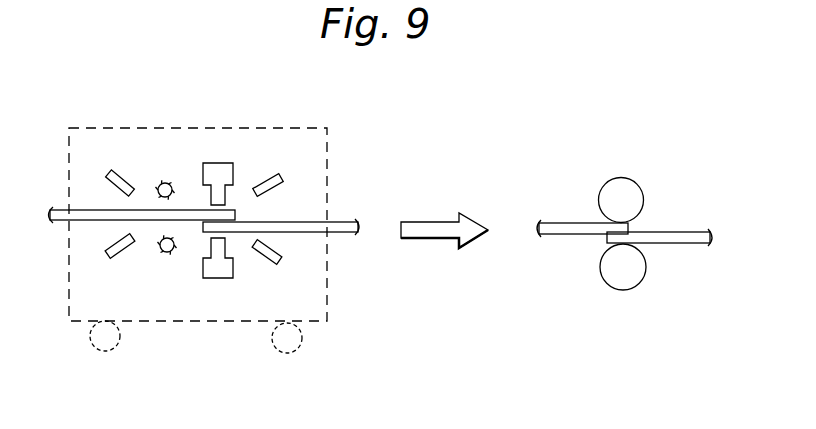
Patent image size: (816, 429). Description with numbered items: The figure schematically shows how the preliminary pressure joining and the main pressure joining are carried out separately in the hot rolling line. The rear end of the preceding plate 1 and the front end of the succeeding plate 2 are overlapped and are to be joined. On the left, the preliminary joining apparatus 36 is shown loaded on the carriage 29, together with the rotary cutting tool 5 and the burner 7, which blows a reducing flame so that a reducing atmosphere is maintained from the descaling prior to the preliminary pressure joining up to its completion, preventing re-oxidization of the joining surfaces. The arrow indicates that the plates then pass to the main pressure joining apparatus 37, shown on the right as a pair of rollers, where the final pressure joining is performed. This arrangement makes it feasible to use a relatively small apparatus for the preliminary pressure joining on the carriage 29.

The preceding plate 1 is at (318, 228).
The succeeding plate 2 is at (83, 219).
The rotary cutting tool 5 is at (161, 254).
The burner 7 is at (128, 176).
The carriage 29 is at (298, 288).
The preliminary joining apparatus 36 is at (223, 163).
The main pressure joining apparatus 37 is at (630, 178).